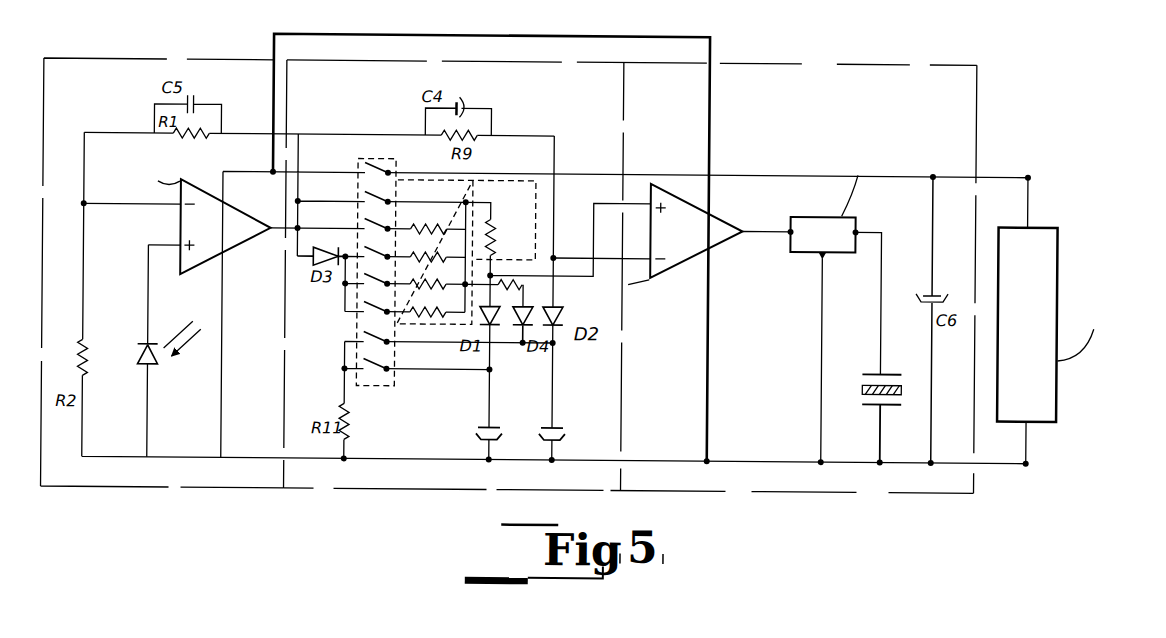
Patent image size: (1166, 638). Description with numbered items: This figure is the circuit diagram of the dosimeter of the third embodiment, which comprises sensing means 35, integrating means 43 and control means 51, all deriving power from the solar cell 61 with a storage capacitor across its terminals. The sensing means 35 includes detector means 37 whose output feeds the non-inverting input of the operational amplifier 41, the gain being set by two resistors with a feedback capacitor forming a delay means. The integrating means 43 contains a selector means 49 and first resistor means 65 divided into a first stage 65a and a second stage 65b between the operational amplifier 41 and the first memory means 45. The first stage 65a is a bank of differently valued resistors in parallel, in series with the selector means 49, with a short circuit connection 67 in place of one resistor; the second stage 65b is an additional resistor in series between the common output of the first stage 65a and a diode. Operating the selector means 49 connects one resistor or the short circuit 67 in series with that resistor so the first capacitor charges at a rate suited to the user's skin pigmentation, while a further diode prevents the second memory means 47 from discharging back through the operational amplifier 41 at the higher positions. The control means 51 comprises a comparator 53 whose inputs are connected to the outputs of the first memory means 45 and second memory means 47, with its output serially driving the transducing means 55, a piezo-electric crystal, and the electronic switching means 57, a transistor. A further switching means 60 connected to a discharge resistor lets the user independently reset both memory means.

The sensing means 35 is at (68, 61).
The detector means 37 is at (134, 333).
The operational amplifier 41 is at (177, 208).
The integrating means 43 is at (385, 62).
The first memory means 45 is at (501, 414).
The second memory means 47 is at (567, 416).
The selector means 49 is at (366, 162).
The control means 51 is at (793, 62).
The comparator 53 is at (672, 254).
The transducing means 55 is at (859, 362).
The electronic switching means 57 is at (829, 305).
The further switching means 60 is at (400, 393).
The solar cell 61 is at (1076, 321).
The first resistor means 65 is at (490, 272).
The first stage 65a is at (409, 327).
The second stage 65b is at (537, 184).
The short circuit connection 67 is at (417, 209).